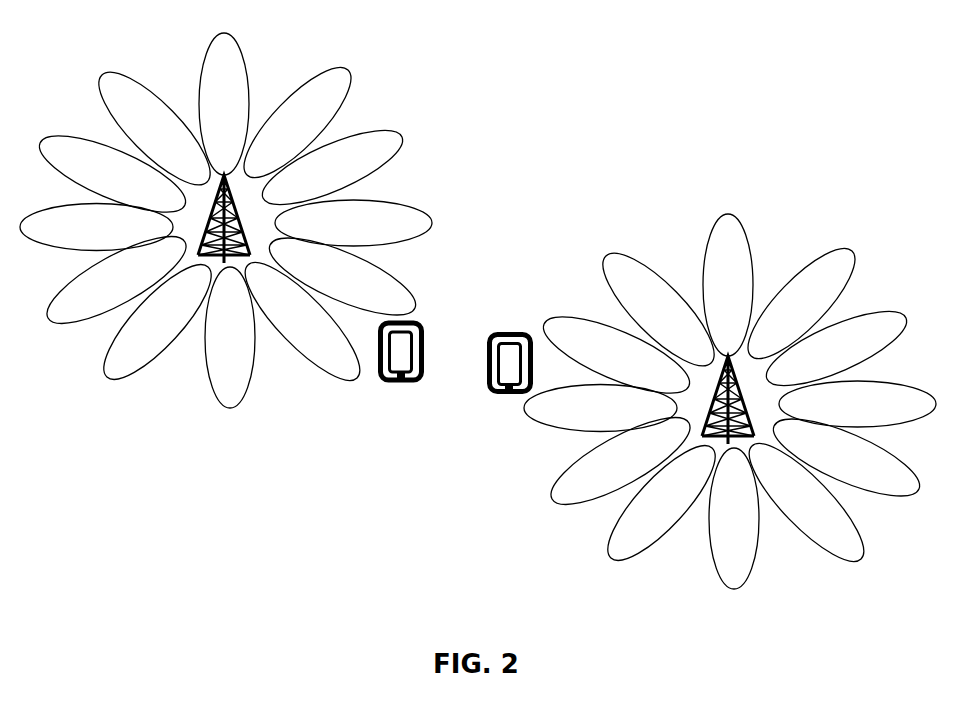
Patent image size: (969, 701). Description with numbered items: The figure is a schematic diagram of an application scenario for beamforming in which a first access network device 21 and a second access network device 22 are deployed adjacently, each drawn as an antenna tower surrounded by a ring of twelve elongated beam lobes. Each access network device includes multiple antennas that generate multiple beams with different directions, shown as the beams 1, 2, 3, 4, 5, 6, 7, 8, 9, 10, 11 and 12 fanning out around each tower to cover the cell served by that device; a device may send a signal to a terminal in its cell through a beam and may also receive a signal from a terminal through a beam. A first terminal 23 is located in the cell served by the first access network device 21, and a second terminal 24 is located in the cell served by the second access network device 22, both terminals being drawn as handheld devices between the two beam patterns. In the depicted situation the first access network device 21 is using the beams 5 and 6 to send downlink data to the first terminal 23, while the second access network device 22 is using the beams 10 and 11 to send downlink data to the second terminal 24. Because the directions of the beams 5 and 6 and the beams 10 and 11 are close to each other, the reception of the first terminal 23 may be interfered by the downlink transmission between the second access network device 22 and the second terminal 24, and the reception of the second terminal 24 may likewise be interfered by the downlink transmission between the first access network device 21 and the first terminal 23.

The beam 1 is at (476, 194).
The beam 2 is at (550, 212).
The beam 3 is at (584, 258).
The beam 4 is at (605, 313).
The beam 5 is at (594, 367).
The beam 6 is at (555, 411).
The beam 7 is at (482, 428).
The beam 8 is at (409, 412).
The beam 9 is at (368, 370).
The beam 10 is at (348, 318).
The beam 11 is at (365, 264).
The beam 12 is at (406, 218).
The first access network device 21 is at (230, 198).
The second access network device 22 is at (720, 380).
The first terminal 23 is at (387, 383).
The second terminal 24 is at (493, 395).